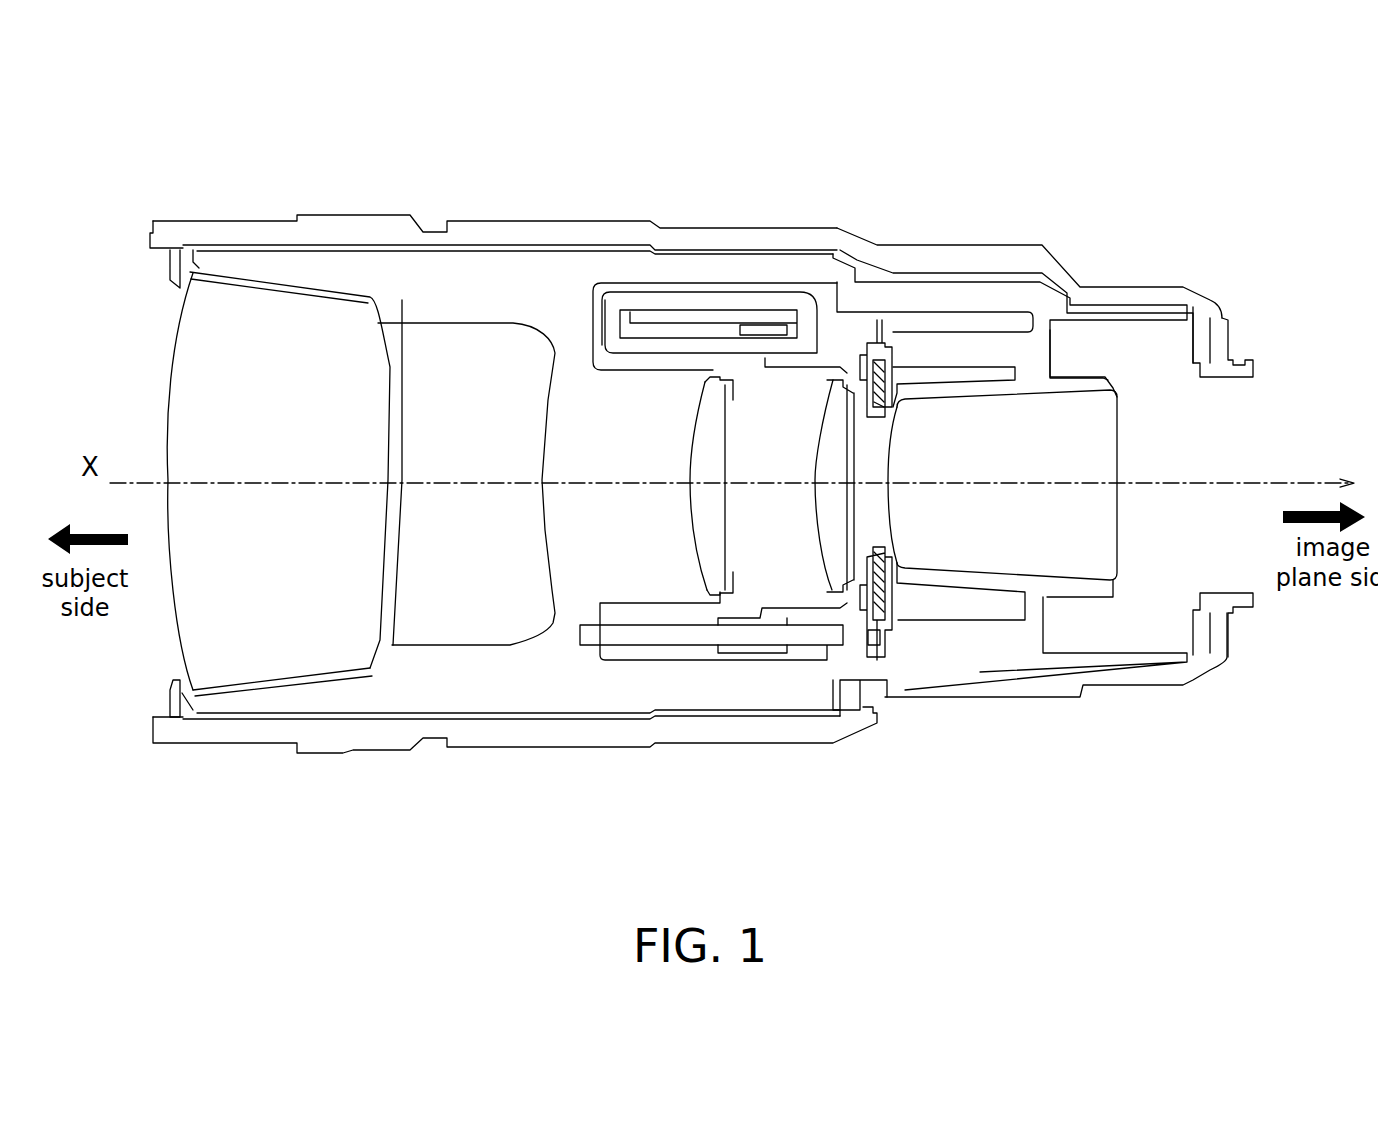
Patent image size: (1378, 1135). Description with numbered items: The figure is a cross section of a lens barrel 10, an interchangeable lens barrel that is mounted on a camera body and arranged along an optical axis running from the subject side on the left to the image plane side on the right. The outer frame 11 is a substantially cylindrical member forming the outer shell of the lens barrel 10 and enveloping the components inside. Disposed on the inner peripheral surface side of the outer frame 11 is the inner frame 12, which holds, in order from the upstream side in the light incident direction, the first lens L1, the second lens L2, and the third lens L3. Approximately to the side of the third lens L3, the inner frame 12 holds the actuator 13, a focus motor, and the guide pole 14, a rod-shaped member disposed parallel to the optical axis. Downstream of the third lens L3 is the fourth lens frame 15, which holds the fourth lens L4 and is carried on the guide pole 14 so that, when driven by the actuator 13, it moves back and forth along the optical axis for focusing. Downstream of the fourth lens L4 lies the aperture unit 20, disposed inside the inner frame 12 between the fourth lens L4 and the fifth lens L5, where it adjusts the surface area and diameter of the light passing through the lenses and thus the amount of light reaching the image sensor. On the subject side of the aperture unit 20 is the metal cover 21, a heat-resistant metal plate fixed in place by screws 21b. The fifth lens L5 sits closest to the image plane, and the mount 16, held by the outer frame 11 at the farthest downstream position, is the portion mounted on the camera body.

The lens barrel 10 is at (277, 152).
The outer frame 11 is at (357, 230).
The inner frame 12 is at (565, 280).
The actuator 13 is at (782, 300).
The guide pole 14 is at (652, 637).
The fourth lens frame 15 is at (775, 617).
The mount 16 is at (1220, 363).
The aperture unit 20 is at (895, 372).
The metal cover 21 is at (863, 640).
The screws 21b is at (866, 640).
The first lens L1 is at (260, 307).
The second lens L2 is at (453, 345).
The third lens L3 is at (712, 415).
The fourth lens L4 is at (835, 395).
The fifth lens L5 is at (1043, 430).